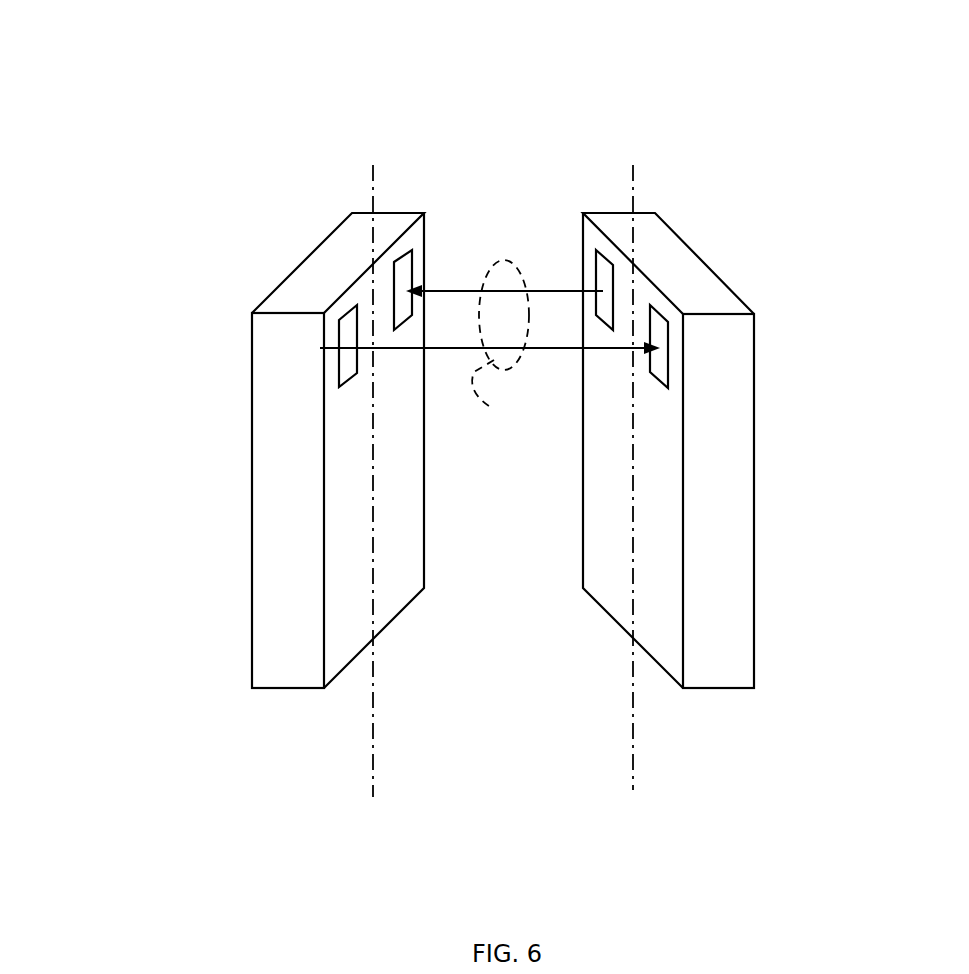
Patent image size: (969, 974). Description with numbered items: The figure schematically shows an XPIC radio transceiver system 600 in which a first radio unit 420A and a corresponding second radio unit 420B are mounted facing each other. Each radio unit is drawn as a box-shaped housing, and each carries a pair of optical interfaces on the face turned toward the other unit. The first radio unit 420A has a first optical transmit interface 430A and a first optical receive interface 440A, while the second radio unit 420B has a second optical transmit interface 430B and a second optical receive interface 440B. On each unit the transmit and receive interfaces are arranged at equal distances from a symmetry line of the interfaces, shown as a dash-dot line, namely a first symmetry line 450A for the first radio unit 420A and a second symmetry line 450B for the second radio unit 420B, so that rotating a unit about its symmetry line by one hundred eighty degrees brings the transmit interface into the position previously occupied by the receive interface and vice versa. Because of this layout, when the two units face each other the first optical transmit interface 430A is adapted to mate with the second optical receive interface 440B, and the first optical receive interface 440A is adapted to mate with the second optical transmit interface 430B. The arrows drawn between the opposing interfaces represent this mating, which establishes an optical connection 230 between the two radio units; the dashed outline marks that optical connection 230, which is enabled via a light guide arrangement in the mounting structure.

The XPIC radio transceiver system 600 is at (100, 56).
The first radio unit 420A is at (280, 483).
The second radio unit 420B is at (733, 531).
The first optical transmit interface 430A is at (356, 357).
The second optical transmit interface 430B is at (602, 272).
The first optical receive interface 440A is at (404, 270).
The second optical receive interface 440B is at (660, 368).
The first symmetry line 450A is at (370, 172).
The second symmetry line 450B is at (628, 168).
The optical connection 230 is at (510, 344).